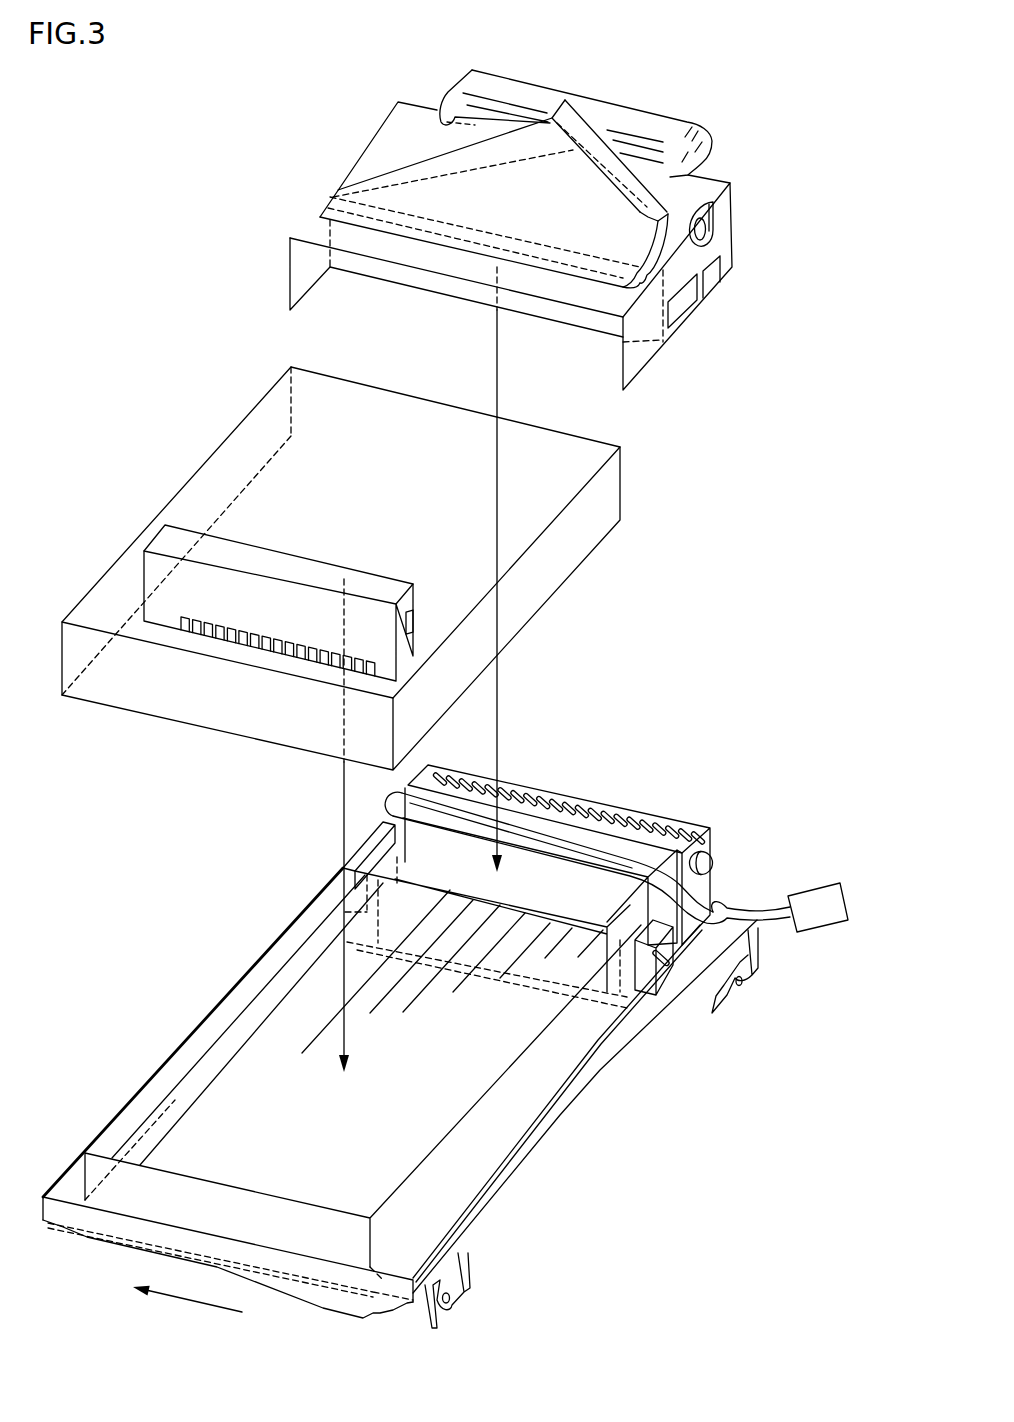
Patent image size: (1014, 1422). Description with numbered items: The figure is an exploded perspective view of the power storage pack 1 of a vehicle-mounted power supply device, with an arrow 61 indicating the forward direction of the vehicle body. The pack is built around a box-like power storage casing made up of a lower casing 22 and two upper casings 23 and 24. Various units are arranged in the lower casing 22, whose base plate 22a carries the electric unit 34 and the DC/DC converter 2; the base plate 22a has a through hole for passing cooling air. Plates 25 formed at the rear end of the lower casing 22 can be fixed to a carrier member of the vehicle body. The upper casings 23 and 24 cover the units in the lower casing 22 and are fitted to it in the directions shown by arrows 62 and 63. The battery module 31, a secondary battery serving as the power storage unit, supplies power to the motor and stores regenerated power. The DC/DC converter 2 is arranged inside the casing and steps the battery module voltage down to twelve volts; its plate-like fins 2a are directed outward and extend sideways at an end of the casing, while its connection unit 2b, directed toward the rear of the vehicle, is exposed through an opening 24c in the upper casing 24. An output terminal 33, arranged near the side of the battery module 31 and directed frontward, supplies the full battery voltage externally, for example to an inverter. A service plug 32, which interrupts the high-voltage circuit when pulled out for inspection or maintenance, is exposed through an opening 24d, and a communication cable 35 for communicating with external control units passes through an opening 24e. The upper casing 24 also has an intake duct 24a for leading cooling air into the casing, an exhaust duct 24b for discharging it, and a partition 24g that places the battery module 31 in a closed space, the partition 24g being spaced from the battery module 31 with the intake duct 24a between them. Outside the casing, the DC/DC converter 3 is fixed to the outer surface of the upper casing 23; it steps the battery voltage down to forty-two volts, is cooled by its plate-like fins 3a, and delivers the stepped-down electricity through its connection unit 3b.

The power storage pack 1 is at (163, 122).
The upper casing 24 is at (372, 148).
The intake duct 24a is at (372, 190).
The exhaust duct 24b is at (640, 120).
The opening 24c is at (702, 230).
The opening 24e is at (722, 247).
The partition 24g is at (360, 265).
The opening 24d is at (692, 310).
The upper casing 23 is at (109, 595).
The DC/DC converter 3 is at (364, 660).
The fins 3a is at (296, 653).
The connection unit 3b is at (415, 625).
The arrow 63 is at (498, 704).
The arrow 62 is at (344, 807).
The arrow 61 is at (187, 1302).
The battery module 31 is at (298, 940).
The output terminal 33 is at (367, 853).
The DC/DC converter 2 is at (586, 844).
The fins 2a is at (563, 800).
The electric unit 34 is at (570, 880).
The connection unit 2b is at (707, 865).
The communication cable 35 is at (815, 908).
The lower casing 22 is at (400, 1144).
The base plate 22a is at (638, 1000).
The plates 25 is at (748, 985).
The service plug 32 is at (647, 980).